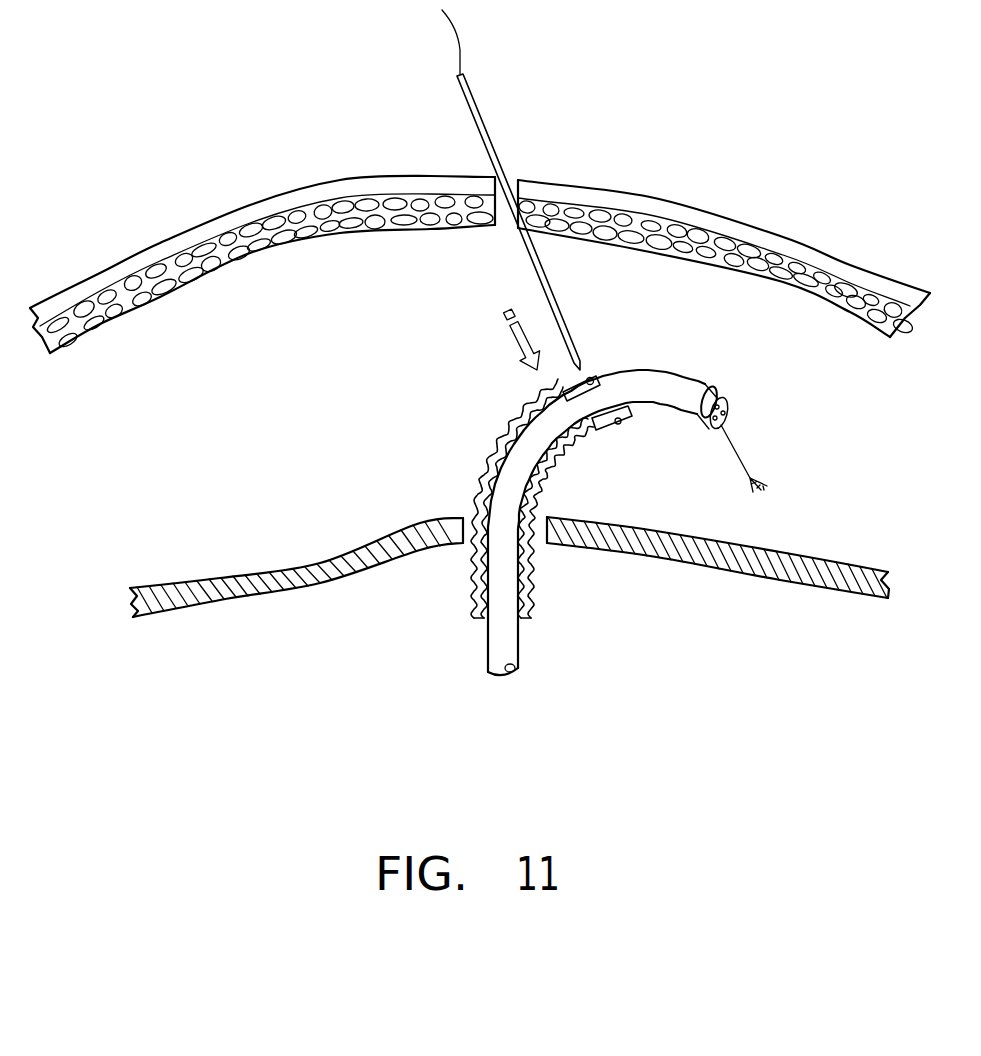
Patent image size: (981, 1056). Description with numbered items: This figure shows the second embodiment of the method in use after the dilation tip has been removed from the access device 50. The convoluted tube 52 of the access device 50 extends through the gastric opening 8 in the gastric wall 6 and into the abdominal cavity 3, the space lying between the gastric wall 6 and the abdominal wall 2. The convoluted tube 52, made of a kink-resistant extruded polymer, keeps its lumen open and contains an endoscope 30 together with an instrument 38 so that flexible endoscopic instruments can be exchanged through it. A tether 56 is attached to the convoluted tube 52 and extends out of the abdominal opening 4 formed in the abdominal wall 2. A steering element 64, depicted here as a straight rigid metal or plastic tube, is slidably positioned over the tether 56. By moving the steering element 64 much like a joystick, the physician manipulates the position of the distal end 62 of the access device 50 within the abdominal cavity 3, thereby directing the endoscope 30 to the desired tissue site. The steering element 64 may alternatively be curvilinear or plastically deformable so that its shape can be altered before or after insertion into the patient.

The abdominal wall 2 is at (615, 180).
The abdominal cavity 3 is at (352, 391).
The abdominal opening 4 is at (512, 183).
The gastric wall 6 is at (253, 567).
The gastric opening 8 is at (538, 532).
The endoscope 30 is at (680, 377).
The instrument 38 is at (740, 471).
The access device 50 is at (560, 581).
The convoluted tube 52 is at (540, 606).
The tether 56 is at (458, 50).
The distal end 62 is at (598, 372).
The steering element 64 is at (552, 287).